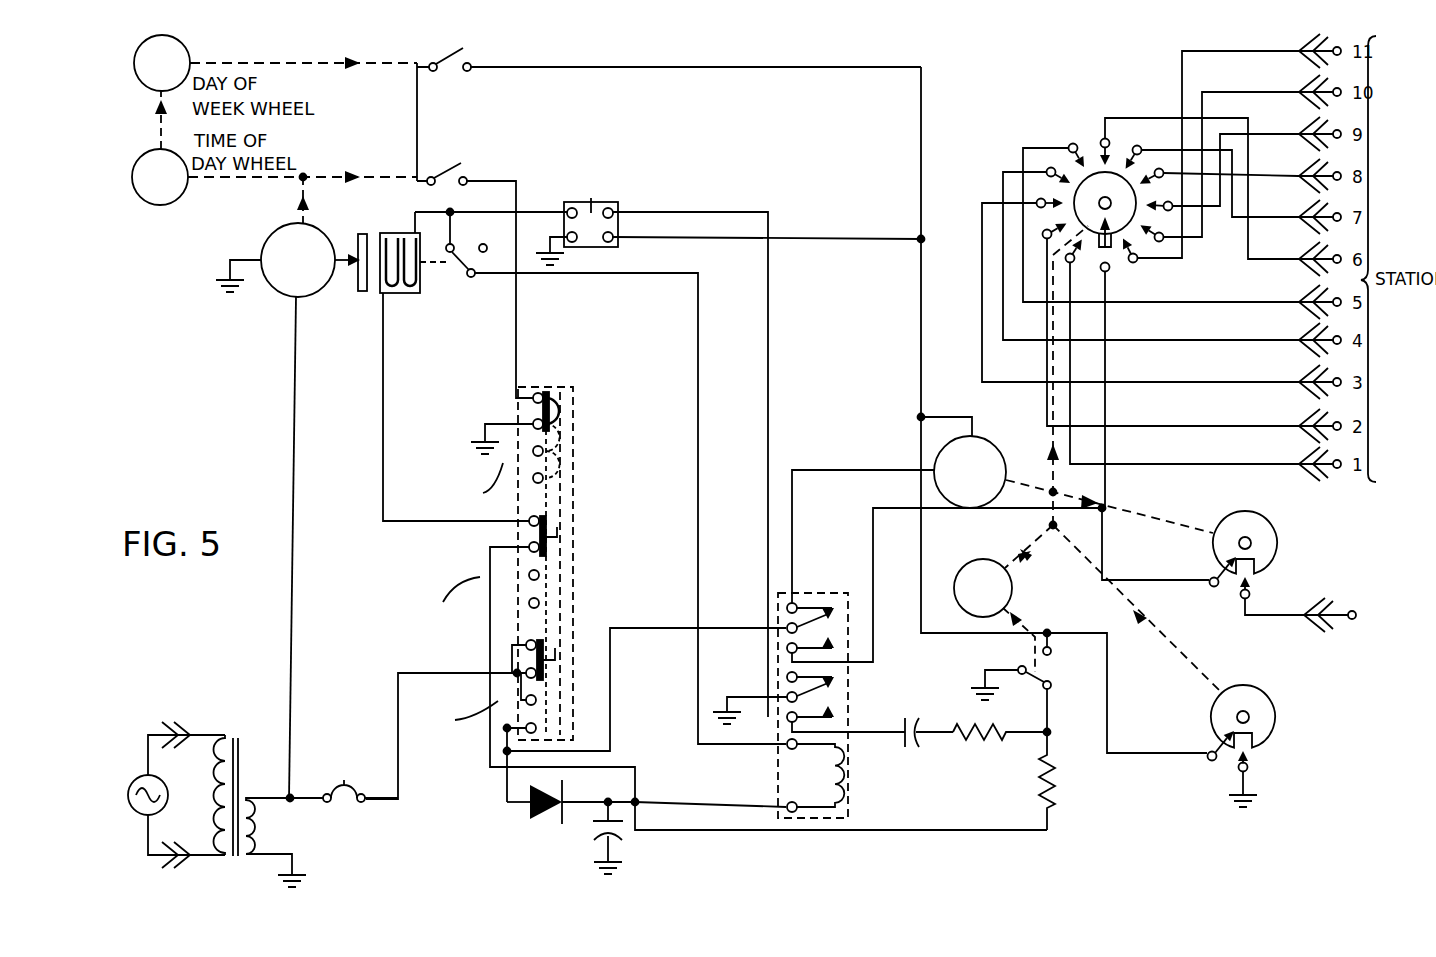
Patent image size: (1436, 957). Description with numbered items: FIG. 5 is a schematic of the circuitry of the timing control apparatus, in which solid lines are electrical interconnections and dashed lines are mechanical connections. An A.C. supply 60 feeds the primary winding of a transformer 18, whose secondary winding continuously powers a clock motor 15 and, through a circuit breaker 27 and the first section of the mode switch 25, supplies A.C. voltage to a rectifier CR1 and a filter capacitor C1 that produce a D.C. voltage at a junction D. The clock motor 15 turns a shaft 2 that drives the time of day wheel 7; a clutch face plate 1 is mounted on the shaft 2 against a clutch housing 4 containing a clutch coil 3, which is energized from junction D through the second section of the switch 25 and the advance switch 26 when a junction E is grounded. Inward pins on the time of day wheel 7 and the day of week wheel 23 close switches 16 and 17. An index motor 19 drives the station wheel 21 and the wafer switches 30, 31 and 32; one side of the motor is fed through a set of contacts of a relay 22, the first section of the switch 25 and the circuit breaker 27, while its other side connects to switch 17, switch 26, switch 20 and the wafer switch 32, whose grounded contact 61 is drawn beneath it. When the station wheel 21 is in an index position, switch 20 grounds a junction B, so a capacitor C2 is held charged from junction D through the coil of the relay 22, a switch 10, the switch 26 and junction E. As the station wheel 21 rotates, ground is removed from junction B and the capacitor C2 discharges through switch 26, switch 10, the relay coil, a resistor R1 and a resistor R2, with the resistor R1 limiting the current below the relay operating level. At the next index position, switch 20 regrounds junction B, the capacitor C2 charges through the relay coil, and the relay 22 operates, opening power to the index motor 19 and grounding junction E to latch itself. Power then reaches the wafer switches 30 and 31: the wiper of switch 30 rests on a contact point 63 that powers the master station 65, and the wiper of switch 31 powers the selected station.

The clutch face plate 1 is at (370, 240).
The shaft 2 is at (355, 252).
The clutch coil 3 is at (406, 295).
The clutch housing 4 is at (381, 292).
The time of day wheel 7 is at (176, 203).
The switch 10 is at (472, 278).
The clock motor 15 is at (272, 238).
The switch 16 is at (466, 176).
The switch 17 is at (457, 75).
The transformer 18 is at (237, 738).
The index motor 19 is at (1002, 451).
The switch 20 is at (1050, 672).
The station wheel 21 is at (968, 567).
The relay 22 is at (848, 817).
The day of week wheel 23 is at (190, 55).
The mode switch 25 is at (573, 555).
The advance switch 26 is at (613, 244).
The circuit breaker 27 is at (364, 802).
The wafer switch 30 is at (1278, 534).
The wafer switch 31 is at (1095, 178).
The wafer switch 32 is at (1268, 694).
The A.C. supply 60 is at (129, 780).
The contact 61 is at (1249, 768).
The contact point 63 is at (1242, 600).
The master station 65 is at (1368, 621).
The rectifier CR1 is at (520, 813).
The filter capacitor C1 is at (600, 845).
The capacitor C2 is at (909, 714).
The resistor R1 is at (1028, 780).
The resistor R2 is at (985, 743).
The junction B is at (1051, 736).
The junction D is at (640, 806).
The junction E is at (790, 724).